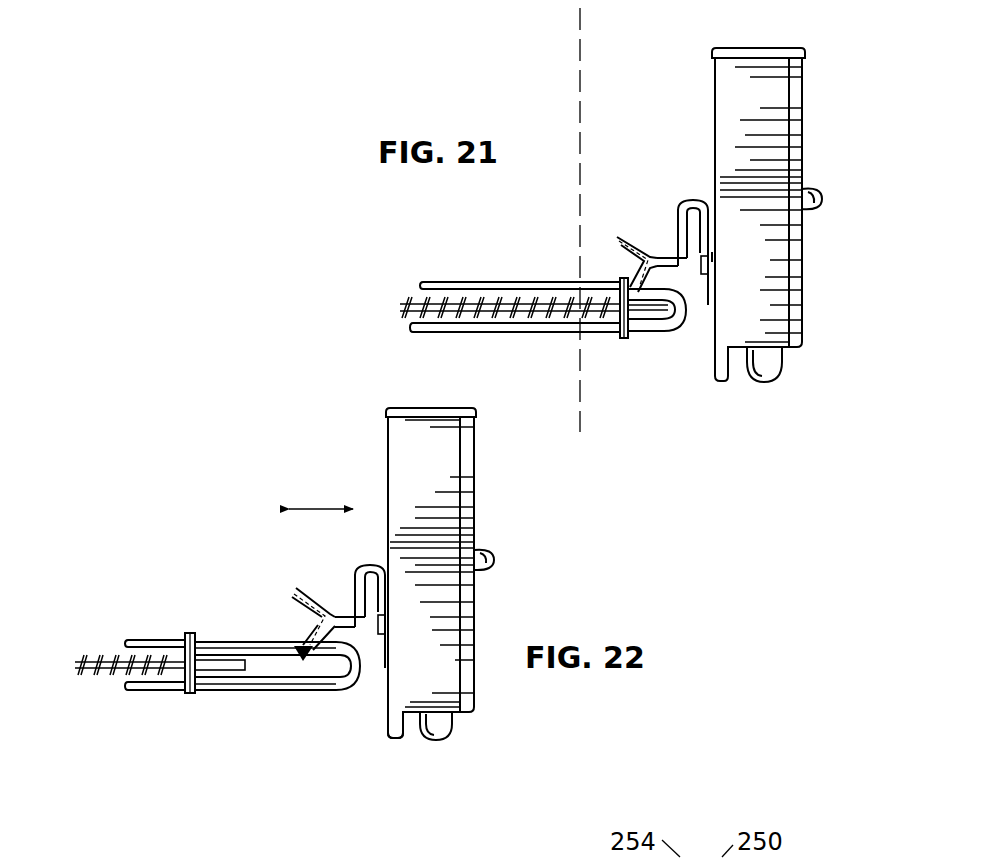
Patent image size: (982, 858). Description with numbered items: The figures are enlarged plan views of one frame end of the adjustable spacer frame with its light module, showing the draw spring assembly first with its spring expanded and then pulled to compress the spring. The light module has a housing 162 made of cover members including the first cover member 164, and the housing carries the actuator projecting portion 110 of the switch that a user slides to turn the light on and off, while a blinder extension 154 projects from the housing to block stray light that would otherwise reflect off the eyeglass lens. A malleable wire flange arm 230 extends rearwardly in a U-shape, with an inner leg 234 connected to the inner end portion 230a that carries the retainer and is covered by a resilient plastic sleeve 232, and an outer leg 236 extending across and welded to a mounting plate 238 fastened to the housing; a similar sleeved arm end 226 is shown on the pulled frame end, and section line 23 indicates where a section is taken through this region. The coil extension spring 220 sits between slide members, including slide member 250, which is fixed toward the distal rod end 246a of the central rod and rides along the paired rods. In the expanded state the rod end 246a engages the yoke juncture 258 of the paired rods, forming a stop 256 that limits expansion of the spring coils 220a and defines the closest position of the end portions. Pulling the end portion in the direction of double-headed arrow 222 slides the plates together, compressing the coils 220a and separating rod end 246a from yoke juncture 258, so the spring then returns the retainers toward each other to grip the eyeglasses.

In FIG. 21, the section line 23- 23 is at (580, 8).
In FIG. 21, the first cover member 164 is at (755, 50).
In FIG. 21, the actuator projecting portion 110 is at (818, 188).
In FIG. 21, the flange arm 230 is at (692, 192).
In FIG. 21, the inner leg 234 is at (678, 218).
In FIG. 21, the resilient plastic sleeve 232 is at (623, 232).
In FIG. 21, the mounting plate 238 is at (716, 280).
In FIG. 21, the coil extension spring 220 is at (409, 288).
In FIG. 21, the stop 256 is at (660, 343).
In FIG. 21, the slide member 250 is at (622, 338).
In FIG. 22, the slide member 250 is at (191, 695).
In FIG. 22, the housing 162 is at (413, 404).
In FIG. 22, the blinder extension 154 is at (391, 740).
In FIG. 22, the outer leg 236 is at (347, 563).
In FIG. 22, the double-headed arrow 222 is at (313, 503).
In FIG. 22, the tube 226 is at (298, 578).
In FIG. 22, the inner end portion 230a is at (324, 586).
In FIG. 22, the spring coils 220a is at (95, 672).
In FIG. 22, the yoke juncture 258 is at (360, 693).
In FIG. 22, the distal rod end 246a is at (224, 658).